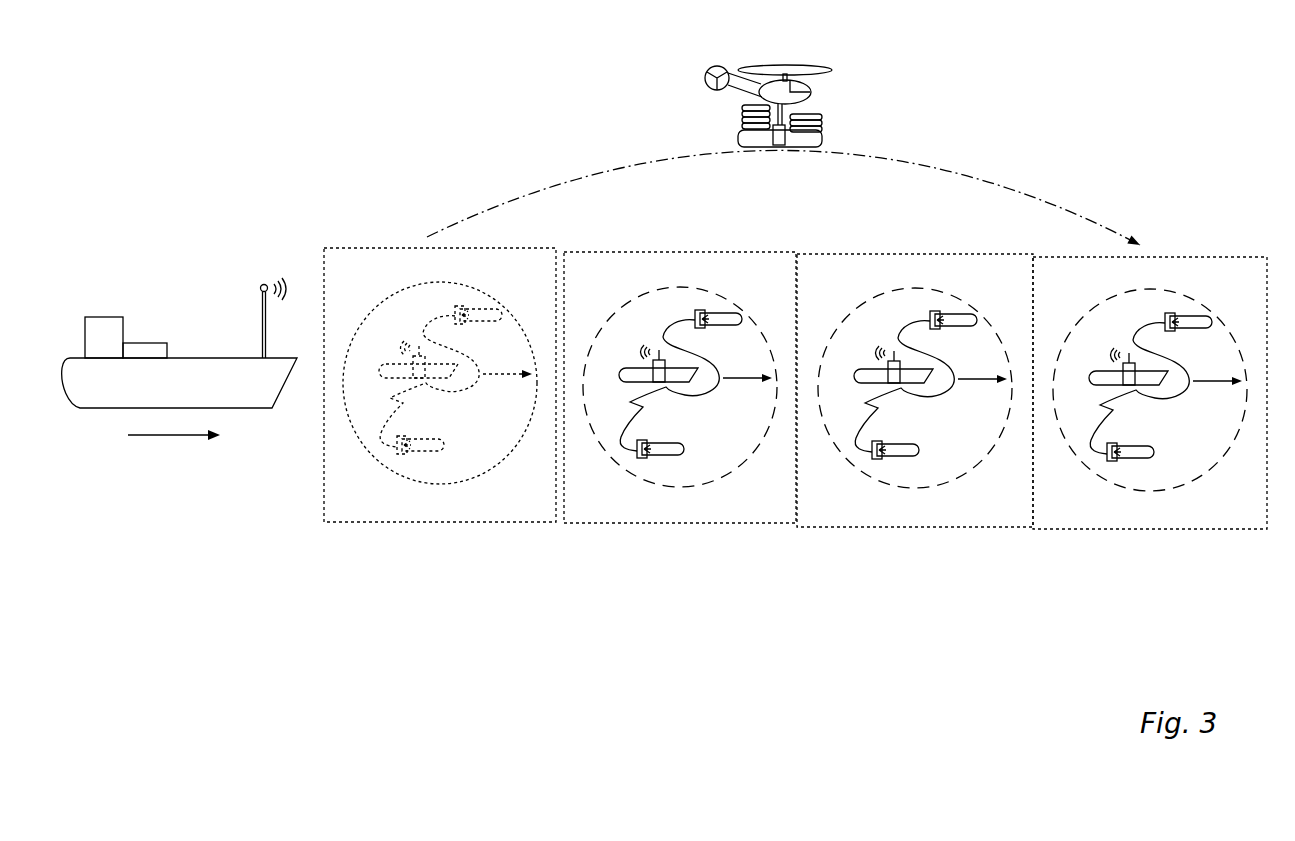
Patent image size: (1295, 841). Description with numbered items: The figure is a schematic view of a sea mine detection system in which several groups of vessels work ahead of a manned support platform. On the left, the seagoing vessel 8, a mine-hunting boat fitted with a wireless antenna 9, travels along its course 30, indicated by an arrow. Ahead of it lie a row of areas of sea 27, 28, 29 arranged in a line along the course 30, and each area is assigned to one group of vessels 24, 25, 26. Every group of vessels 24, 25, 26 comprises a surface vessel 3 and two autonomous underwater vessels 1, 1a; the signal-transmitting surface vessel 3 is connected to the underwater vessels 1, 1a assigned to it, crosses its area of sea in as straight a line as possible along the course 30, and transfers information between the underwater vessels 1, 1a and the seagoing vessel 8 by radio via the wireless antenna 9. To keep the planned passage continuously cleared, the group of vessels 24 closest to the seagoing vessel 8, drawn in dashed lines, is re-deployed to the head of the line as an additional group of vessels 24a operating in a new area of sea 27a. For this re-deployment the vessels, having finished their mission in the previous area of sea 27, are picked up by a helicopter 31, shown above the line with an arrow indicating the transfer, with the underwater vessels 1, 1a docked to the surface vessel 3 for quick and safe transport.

The autonomous underwater vessel 1 is at (658, 452).
The autonomous underwater vessel 1a is at (720, 311).
The surface vessel 3 is at (632, 372).
The seagoing vessel 8 is at (95, 395).
The wireless antenna 9 is at (261, 287).
The group of vessels 24 is at (427, 485).
The additional group of vessels 24a is at (1137, 492).
The group of vessels 25 is at (670, 487).
The group of vessels 26 is at (902, 488).
The area of sea 27 is at (496, 522).
The new area of sea 27a is at (1192, 529).
The area of sea 28 is at (740, 523).
The area of sea 29 is at (943, 527).
The course 30 is at (175, 437).
The helicopter 31 is at (858, 92).